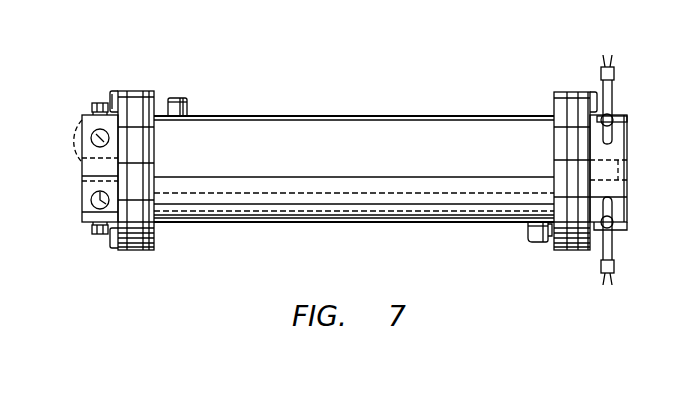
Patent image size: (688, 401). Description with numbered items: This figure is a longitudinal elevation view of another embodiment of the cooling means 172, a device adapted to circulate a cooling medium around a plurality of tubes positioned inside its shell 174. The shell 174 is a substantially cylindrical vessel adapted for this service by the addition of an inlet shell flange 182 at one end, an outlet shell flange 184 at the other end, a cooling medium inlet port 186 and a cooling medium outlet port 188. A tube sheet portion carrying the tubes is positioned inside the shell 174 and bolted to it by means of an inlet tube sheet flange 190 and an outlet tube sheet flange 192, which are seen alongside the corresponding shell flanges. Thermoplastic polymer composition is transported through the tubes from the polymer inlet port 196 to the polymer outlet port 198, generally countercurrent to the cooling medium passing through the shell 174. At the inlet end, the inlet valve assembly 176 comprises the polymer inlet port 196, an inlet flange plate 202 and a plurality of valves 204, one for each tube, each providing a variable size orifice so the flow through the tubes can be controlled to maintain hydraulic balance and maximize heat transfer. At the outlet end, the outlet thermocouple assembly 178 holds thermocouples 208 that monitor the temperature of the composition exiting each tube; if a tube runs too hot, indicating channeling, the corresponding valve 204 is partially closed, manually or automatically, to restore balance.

The cooling means 172 is at (366, 114).
The shell 174 is at (242, 197).
The inlet valve assembly 176 is at (108, 97).
The outlet thermocouple assembly 178 is at (622, 115).
The inlet shell flange 182 is at (146, 100).
The outlet shell flange 184 is at (558, 110).
The cooling medium inlet port 186 is at (532, 239).
The cooling medium outlet port 188 is at (186, 104).
The inlet tube sheet flange 190 is at (135, 97).
The outlet tube sheet flange 192 is at (572, 102).
The polymer inlet port 196 is at (76, 160).
The polymer outlet port 198 is at (625, 170).
The inlet flange plate 202 is at (122, 248).
The valve 204 is at (92, 136).
The thermocouple 208 is at (614, 72).